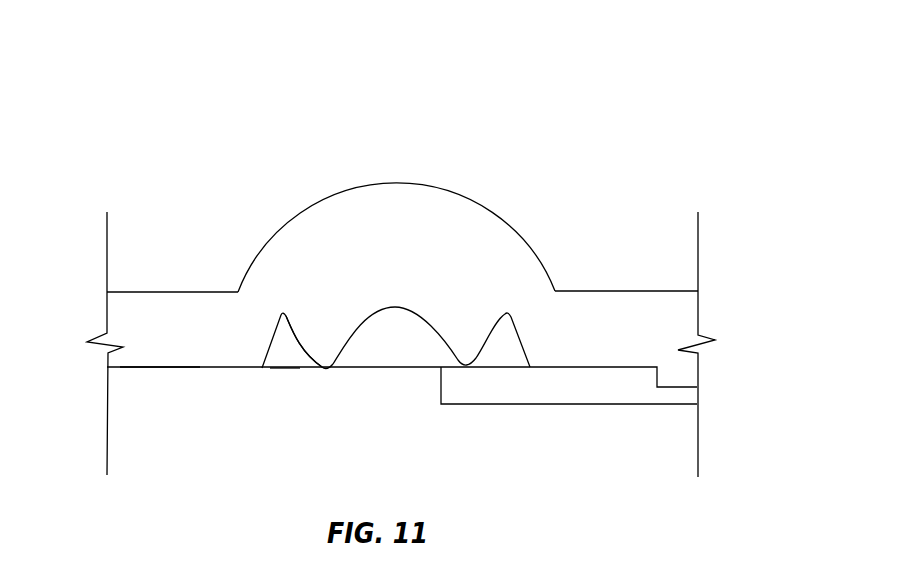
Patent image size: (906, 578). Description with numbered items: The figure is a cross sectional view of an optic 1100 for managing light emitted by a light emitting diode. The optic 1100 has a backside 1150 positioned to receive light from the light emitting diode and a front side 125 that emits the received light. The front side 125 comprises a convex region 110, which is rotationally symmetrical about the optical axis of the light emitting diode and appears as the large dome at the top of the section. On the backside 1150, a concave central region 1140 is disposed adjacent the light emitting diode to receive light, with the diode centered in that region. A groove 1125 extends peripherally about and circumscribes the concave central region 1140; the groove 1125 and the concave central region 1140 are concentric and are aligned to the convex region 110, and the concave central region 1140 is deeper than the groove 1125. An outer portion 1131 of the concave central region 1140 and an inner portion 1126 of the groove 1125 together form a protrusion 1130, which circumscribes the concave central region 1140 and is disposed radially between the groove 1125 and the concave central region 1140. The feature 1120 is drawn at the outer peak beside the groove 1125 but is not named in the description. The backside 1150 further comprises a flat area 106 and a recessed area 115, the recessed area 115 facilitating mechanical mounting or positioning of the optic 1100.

The optic 1100 is at (702, 141).
The convex region 110 is at (457, 197).
The front side 125 is at (667, 266).
The flat area 106 is at (122, 369).
The recessed area 115 is at (631, 390).
The backside 1150 is at (168, 387).
The first peak structure 1120 is at (263, 368).
The groove 1125 is at (288, 356).
The inner portion of the groove 1126 is at (299, 335).
The protrusion 1130 is at (333, 369).
The outer portion of the concave central region 1131 is at (345, 350).
The concave central region 1140 is at (391, 352).